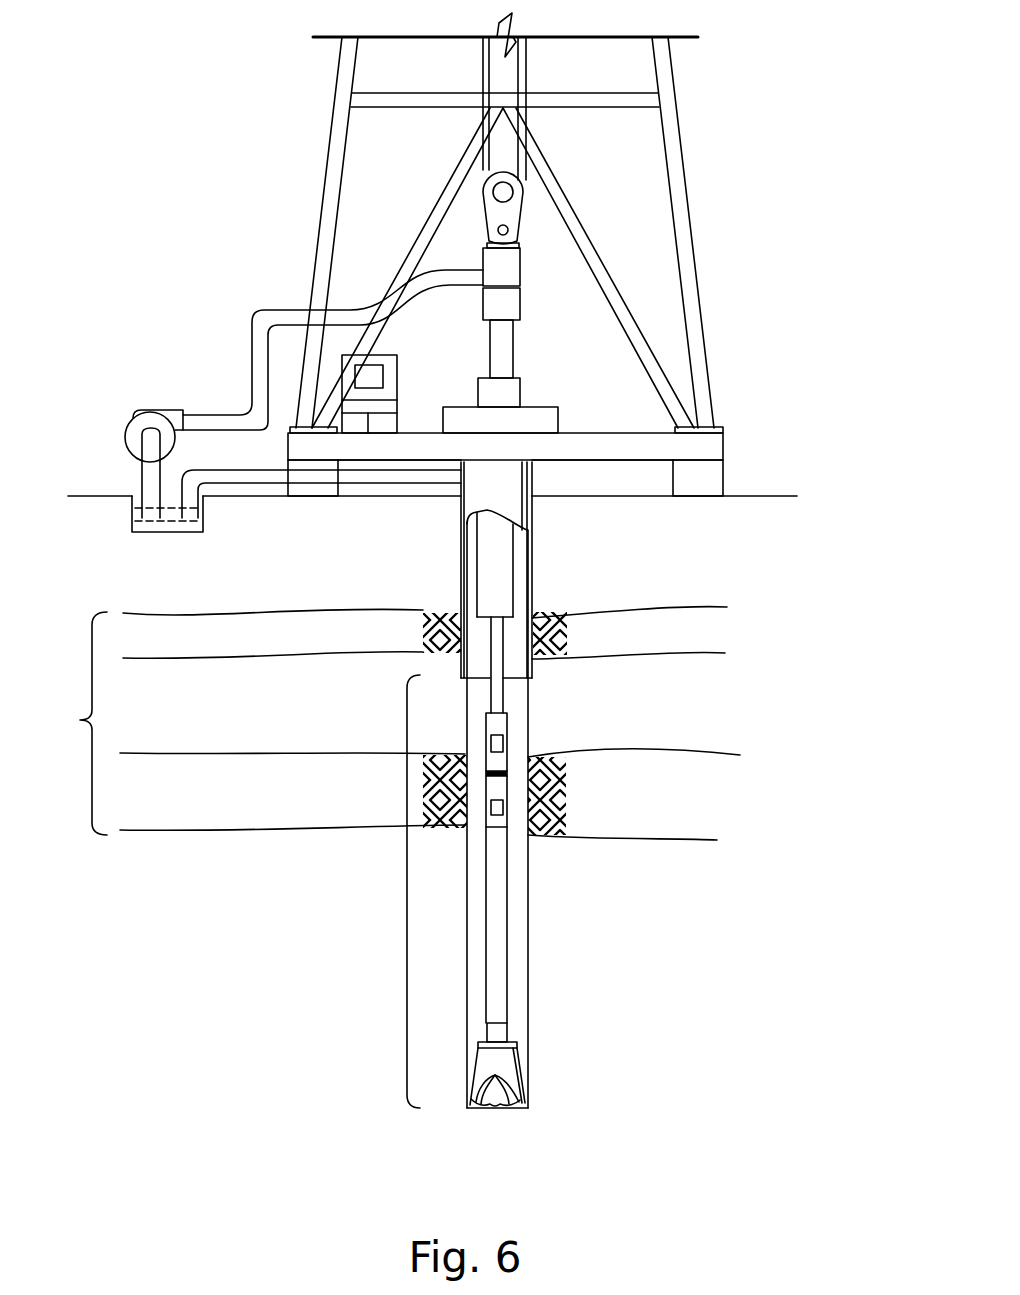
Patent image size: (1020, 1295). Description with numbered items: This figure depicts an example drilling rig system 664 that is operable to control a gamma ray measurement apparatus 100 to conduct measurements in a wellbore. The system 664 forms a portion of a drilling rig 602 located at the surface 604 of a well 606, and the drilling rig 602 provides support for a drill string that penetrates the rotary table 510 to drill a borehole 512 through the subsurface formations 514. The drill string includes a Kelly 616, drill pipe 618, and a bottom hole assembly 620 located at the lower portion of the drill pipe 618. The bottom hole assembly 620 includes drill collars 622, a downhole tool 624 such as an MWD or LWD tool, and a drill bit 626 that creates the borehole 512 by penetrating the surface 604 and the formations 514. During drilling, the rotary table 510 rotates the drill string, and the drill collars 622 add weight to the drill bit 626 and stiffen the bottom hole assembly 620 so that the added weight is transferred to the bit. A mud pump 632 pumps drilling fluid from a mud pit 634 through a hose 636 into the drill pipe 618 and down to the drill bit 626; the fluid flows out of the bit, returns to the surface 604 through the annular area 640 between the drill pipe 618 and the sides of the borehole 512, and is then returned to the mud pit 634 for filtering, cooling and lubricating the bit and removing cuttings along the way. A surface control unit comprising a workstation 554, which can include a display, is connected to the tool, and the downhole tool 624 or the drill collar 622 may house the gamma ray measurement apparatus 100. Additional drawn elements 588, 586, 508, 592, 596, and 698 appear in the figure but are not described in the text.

The system 664 is at (200, 128).
The derrick leg 588 is at (678, 128).
The drilling rig 602 is at (697, 222).
The rig floor 586 is at (723, 442).
The surface 604 is at (745, 496).
The well 606 is at (548, 490).
The drill collars 622 is at (513, 578).
The drill pipe 618 is at (497, 653).
The annular area 640 is at (518, 706).
The gamma ray measurement apparatus 100 is at (510, 728).
The drill collar 508 is at (510, 895).
The borehole 512 is at (527, 974).
The downhole tool 624 is at (497, 1005).
The drill bit 626 is at (505, 1063).
The bottom hole assembly 620 is at (405, 897).
The subsurface formations 514 is at (383, 723).
The mud pump 632 is at (155, 410).
The mud pit 634 is at (152, 534).
The hose 636 is at (253, 360).
The control unit 592 is at (383, 350).
The workstation 554 is at (397, 366).
The processor 596 is at (385, 377).
The rotary table 510 is at (460, 406).
The Kelly 616 is at (513, 346).
The kelly bushing 698 is at (520, 395).